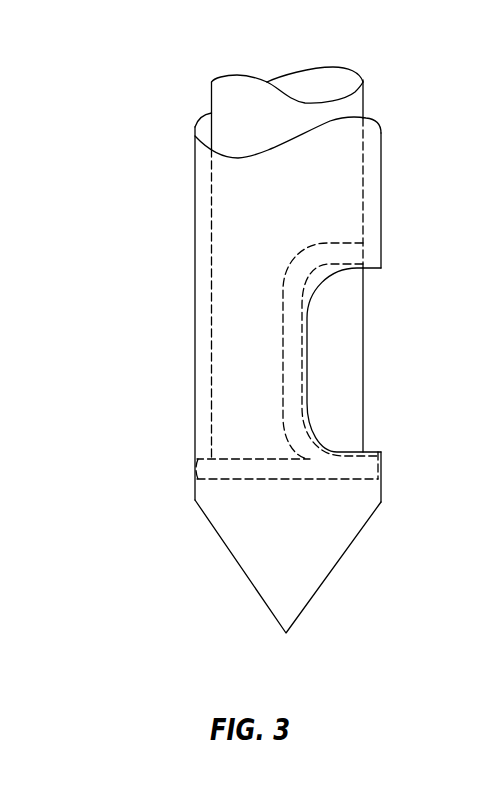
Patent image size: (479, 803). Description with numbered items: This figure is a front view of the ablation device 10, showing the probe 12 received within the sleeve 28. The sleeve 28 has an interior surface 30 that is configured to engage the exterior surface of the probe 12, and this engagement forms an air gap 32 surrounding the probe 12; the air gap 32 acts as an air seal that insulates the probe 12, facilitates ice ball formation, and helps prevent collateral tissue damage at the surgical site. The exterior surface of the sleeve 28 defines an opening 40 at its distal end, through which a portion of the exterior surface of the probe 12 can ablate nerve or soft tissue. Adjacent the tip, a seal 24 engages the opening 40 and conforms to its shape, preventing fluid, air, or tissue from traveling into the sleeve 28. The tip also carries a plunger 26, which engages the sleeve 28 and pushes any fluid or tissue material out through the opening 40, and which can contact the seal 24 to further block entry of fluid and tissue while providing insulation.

The ablation device 10 is at (108, 158).
The probe 12 is at (352, 108).
The seal 24 is at (292, 333).
The plunger 26 is at (252, 468).
The sleeve 28 is at (195, 308).
The interior surface 30 is at (204, 127).
The air gap 32 is at (382, 184).
The opening 40 is at (307, 367).